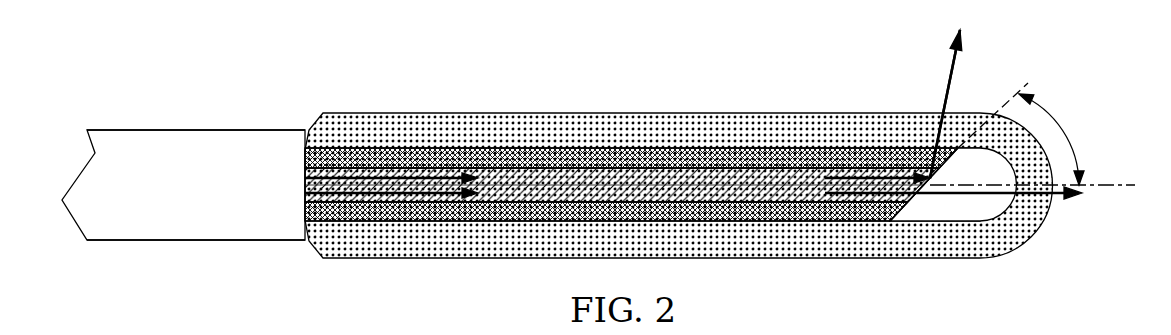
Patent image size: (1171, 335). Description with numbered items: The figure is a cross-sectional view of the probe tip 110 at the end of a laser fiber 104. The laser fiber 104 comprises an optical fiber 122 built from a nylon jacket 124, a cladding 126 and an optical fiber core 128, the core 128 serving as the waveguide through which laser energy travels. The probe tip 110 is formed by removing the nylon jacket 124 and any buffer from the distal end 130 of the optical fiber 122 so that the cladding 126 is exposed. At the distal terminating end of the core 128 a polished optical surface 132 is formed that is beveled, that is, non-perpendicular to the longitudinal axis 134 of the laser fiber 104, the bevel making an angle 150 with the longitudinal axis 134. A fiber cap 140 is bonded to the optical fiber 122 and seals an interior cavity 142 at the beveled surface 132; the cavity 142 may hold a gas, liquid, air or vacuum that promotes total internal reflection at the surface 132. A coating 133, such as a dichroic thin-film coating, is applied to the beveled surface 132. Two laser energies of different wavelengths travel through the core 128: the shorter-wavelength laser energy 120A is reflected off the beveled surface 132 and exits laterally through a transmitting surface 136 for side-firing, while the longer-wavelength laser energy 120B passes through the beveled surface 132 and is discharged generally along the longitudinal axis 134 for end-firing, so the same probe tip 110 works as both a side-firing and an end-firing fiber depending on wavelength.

The laser fiber 104 is at (165, 82).
The probe tip 110 is at (732, 163).
The laser energy 120A is at (430, 166).
The laser energy 120B is at (452, 205).
The optical fiber 122 is at (140, 238).
The nylon jacket 124 is at (135, 140).
The cladding 126 is at (532, 157).
The optical fiber core 128 is at (693, 175).
The distal end 130 is at (848, 220).
The polished optical surface 132 is at (908, 204).
The coating 133 is at (930, 216).
The longitudinal axis 134 is at (1107, 185).
The transmitting surface 136 is at (952, 103).
The fiber cap 140 is at (823, 118).
The interior cavity 142 is at (990, 208).
The angle 150 is at (1062, 128).